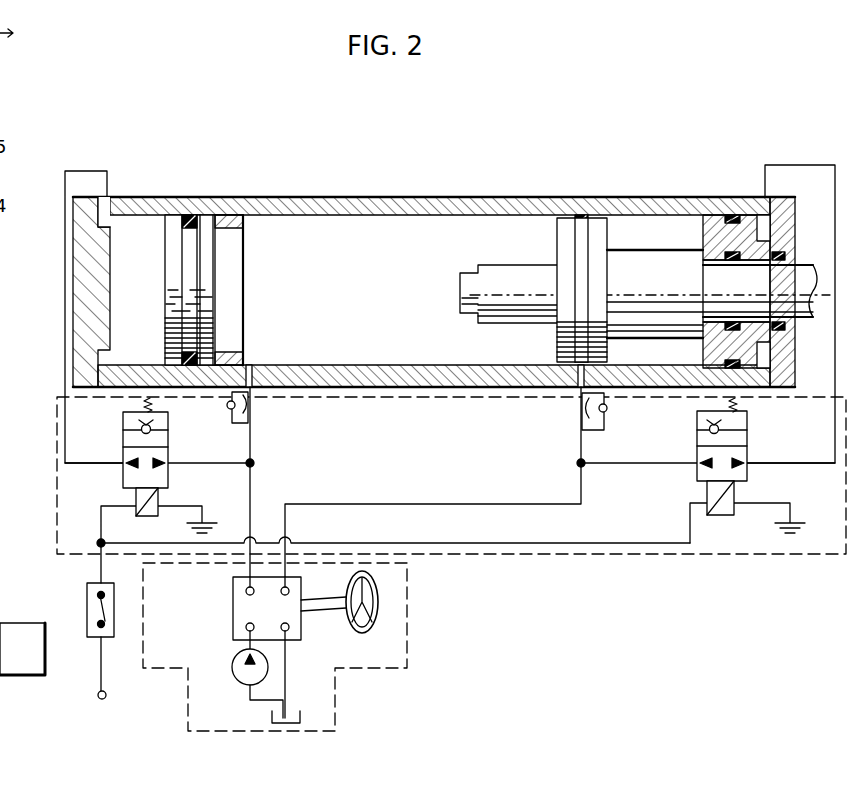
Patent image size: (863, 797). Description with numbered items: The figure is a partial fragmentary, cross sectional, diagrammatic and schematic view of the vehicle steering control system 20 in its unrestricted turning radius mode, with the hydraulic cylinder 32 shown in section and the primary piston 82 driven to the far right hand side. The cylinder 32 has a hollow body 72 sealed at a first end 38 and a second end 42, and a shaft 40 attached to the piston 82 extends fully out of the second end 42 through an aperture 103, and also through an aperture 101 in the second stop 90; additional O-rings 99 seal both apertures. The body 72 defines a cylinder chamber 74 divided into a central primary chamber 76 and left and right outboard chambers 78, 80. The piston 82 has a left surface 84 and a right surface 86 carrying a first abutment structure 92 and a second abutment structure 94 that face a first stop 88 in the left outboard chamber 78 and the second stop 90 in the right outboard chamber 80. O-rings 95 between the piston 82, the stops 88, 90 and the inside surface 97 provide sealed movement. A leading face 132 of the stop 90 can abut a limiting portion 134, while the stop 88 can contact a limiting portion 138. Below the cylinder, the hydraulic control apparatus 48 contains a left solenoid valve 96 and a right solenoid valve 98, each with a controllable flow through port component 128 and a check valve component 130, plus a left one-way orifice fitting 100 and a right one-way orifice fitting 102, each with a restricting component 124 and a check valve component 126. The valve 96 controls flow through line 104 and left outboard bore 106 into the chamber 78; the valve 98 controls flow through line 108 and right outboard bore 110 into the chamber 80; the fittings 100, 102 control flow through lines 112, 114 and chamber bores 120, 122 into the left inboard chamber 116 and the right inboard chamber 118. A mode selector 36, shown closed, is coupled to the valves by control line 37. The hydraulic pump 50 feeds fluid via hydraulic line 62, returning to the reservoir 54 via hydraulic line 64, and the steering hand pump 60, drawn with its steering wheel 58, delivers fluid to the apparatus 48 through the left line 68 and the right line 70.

The vehicle steering control system 20 is at (632, 672).
The hydraulic cylinder 32 is at (440, 148).
The mode selector 36 is at (87, 622).
The control line 37 is at (100, 560).
The first end 38 is at (73, 300).
The shaft 40 is at (805, 271).
The second end 42 is at (797, 210).
The hydraulic control apparatus 48 is at (690, 565).
The hydraulic pump 50 is at (233, 676).
The reservoir 54 is at (300, 714).
The steering wheel 58 is at (367, 633).
The steering hand pump 60 is at (312, 647).
The hydraulic line 62 is at (246, 646).
The hydraulic line 64 is at (287, 666).
The left line 68 is at (240, 573).
The right line 70 is at (292, 566).
The hollow body 72 is at (315, 205).
The cylinder chamber 74 is at (428, 249).
The primary chamber 76 is at (375, 213).
The left outboard chamber 78 is at (123, 339).
The right outboard chamber 80 is at (764, 357).
The primary piston 82 is at (563, 253).
The left surface 84 is at (535, 210).
The right surface 86 is at (618, 212).
The first stop 88 is at (168, 280).
The second stop 90 is at (706, 212).
The first abutment structure 92 is at (488, 306).
The second abutment structure 94 is at (622, 323).
The O-rings 95 is at (188, 212).
The left solenoid valve 96 is at (118, 447).
The inside surface 97 is at (370, 364).
The right solenoid valve 98 is at (755, 440).
The O-rings 99 is at (706, 348).
The left one-way orifice fitting 100 is at (221, 433).
The aperture 101 is at (710, 312).
The right one-way orifice fitting 102 is at (612, 434).
The aperture 103 is at (765, 266).
The line 104 is at (63, 366).
The left outboard bore 106 is at (112, 204).
The line 108 is at (812, 283).
The right outboard bore 110 is at (763, 212).
The line 112 is at (258, 394).
The line 114 is at (572, 399).
The left inboard chamber 116 is at (340, 304).
The right inboard chamber 118 is at (631, 247).
The chamber bore 120 is at (253, 364).
The chamber bore 122 is at (576, 389).
The restricting component 124 is at (256, 400).
The check valve component 126 is at (228, 407).
The controllable flow through port component 128 is at (145, 470).
The check valve component 130 is at (140, 421).
The leading face 132 is at (677, 210).
The limiting portion 134 is at (598, 215).
The limiting portion 138 is at (226, 213).